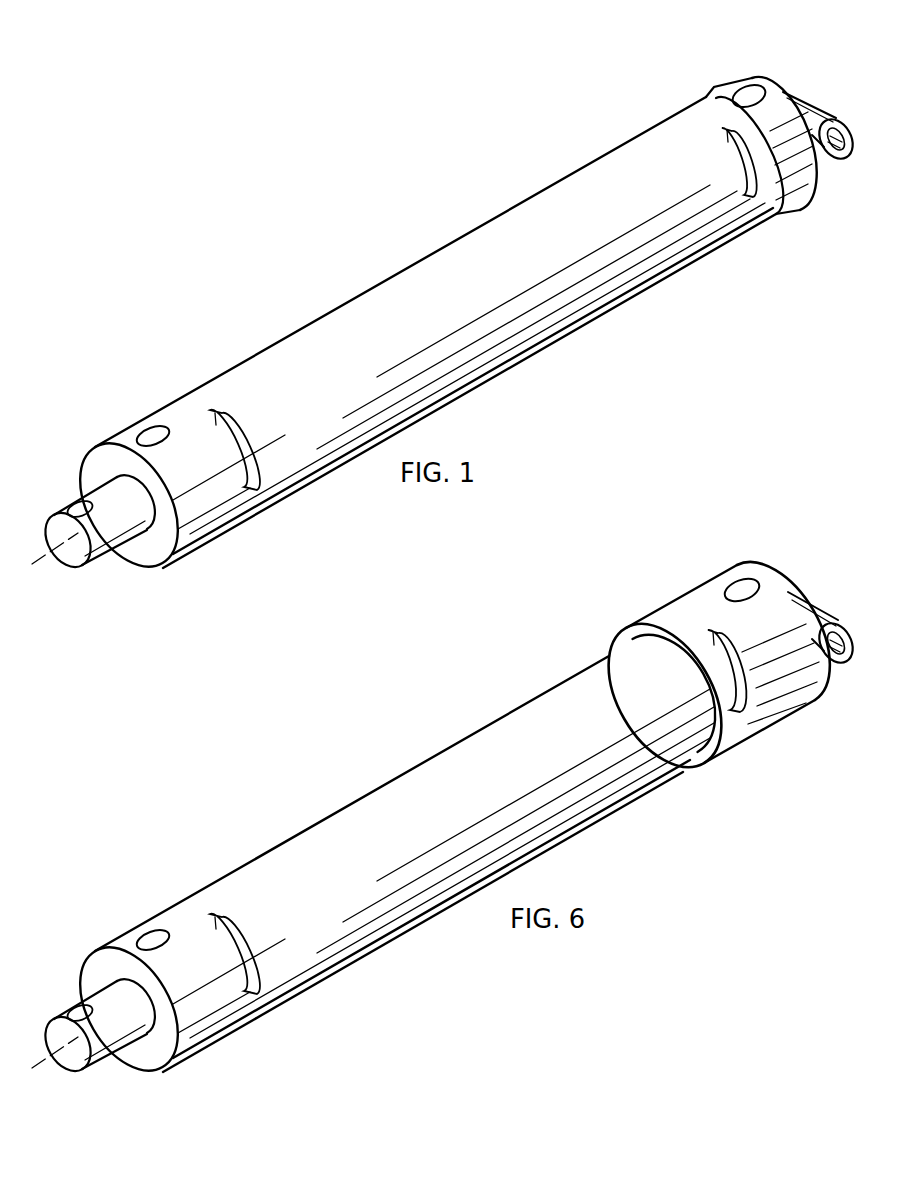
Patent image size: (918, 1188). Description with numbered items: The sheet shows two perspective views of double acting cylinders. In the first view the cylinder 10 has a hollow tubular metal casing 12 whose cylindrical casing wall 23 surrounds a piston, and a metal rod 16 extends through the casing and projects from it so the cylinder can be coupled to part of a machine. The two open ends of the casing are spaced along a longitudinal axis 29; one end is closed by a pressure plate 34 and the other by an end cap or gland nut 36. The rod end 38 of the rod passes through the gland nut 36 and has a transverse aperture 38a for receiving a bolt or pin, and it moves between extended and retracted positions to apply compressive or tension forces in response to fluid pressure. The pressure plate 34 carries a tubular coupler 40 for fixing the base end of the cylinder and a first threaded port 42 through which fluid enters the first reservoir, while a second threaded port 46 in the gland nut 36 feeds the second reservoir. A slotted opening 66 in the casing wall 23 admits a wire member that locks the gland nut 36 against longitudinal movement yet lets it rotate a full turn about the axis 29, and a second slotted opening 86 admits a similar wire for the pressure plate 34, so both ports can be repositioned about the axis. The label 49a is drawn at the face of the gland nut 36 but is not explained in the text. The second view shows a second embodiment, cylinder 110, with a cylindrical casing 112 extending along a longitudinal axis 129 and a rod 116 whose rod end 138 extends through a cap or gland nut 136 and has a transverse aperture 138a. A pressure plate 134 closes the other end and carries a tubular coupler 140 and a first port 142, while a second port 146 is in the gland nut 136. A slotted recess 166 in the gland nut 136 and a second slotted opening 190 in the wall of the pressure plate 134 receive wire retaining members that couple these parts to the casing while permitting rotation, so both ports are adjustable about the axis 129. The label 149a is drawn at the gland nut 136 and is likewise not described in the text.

In FIG. 1, the double acting cylinder 10 is at (540, 172).
In FIG. 1, the casing 12 is at (457, 224).
In FIG. 1, the rod 16 is at (102, 553).
In FIG. 1, the casing wall 23 is at (386, 293).
In FIG. 1, the longitudinal axis 29 is at (33, 563).
In FIG. 1, the pressure plate 34 is at (731, 60).
In FIG. 1, the end cap or gland nut 36 is at (152, 397).
In FIG. 1, the rod end 38 is at (34, 505).
In FIG. 1, the transverse aperture 38a is at (80, 503).
In FIG. 1, the tubular coupler 40 is at (836, 180).
In FIG. 1, the first threaded port 42 is at (752, 92).
In FIG. 1, the second threaded port 46 is at (152, 436).
In FIG. 1, the end face of rod end cap 49a is at (163, 565).
In FIG. 1, the slotted opening 66 is at (241, 443).
In FIG. 1, the second slotted opening 86 is at (735, 148).
In FIG. 6, the second embodiment of double acting cylinder 110 is at (512, 641).
In FIG. 6, the cylindrical casing 112 is at (404, 864).
In FIG. 6, the rod 116 is at (106, 1062).
In FIG. 6, the longitudinal axis 129 is at (71, 1077).
In FIG. 6, the pressure plate 134 is at (728, 553).
In FIG. 6, the cap or gland nut 136 is at (375, 924).
In FIG. 6, the rod end 138 is at (57, 1016).
In FIG. 6, the transverse aperture 138a is at (56, 960).
In FIG. 6, the tubular coupler 140 is at (836, 686).
In FIG. 6, the first port 142 is at (746, 588).
In FIG. 6, the second port 146 is at (130, 916).
In FIG. 6, the end face of rod end cap 149a is at (217, 1083).
In FIG. 6, the slotted recess 166 is at (235, 907).
In FIG. 6, the second slotted opening 190 is at (713, 632).